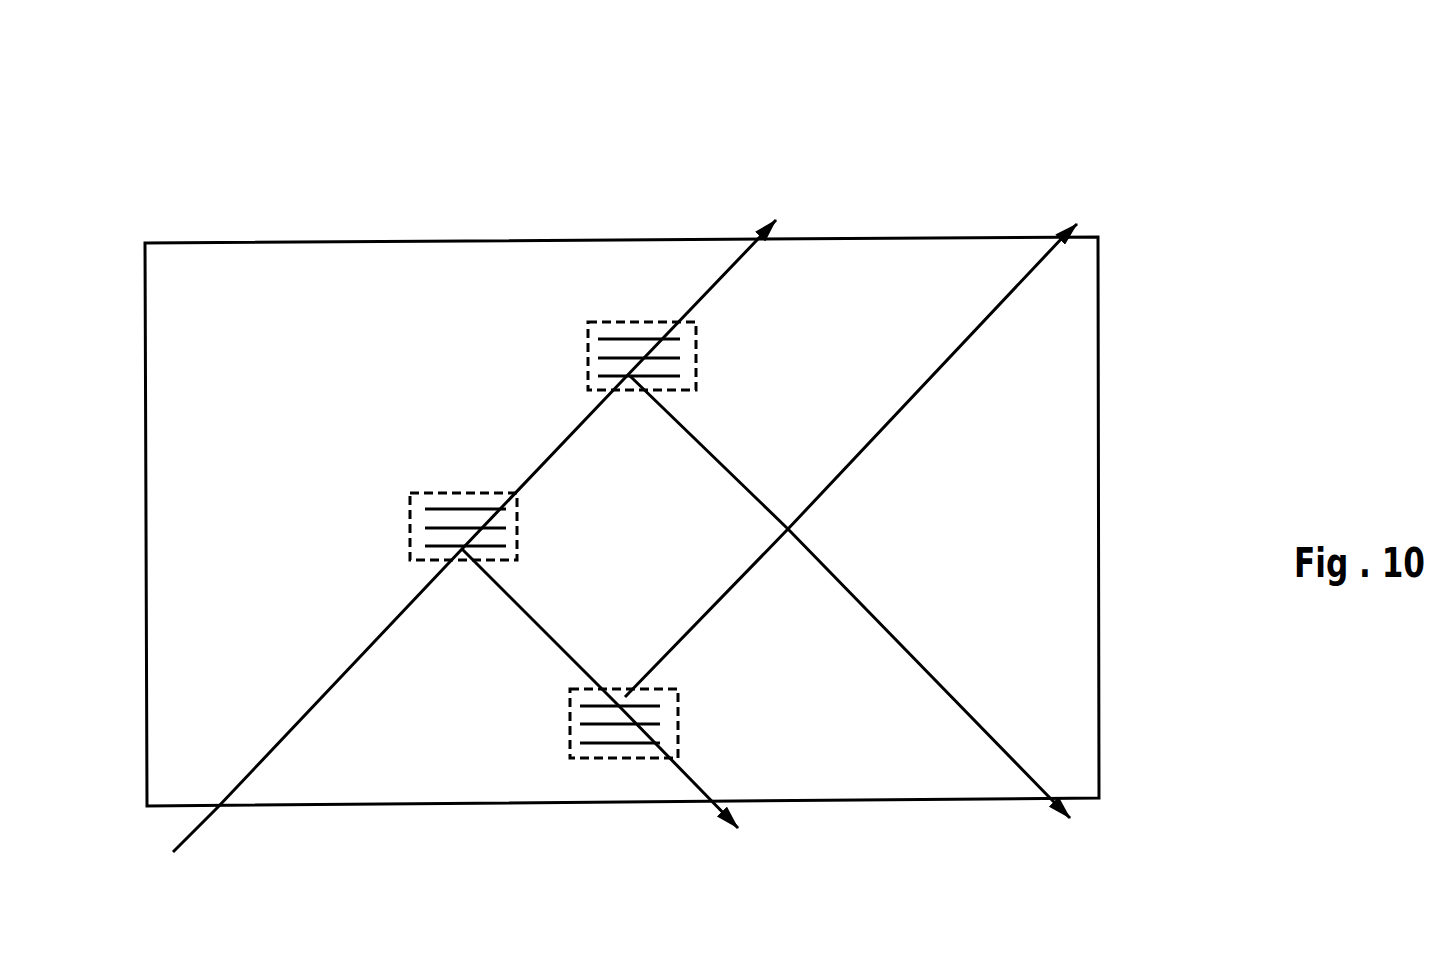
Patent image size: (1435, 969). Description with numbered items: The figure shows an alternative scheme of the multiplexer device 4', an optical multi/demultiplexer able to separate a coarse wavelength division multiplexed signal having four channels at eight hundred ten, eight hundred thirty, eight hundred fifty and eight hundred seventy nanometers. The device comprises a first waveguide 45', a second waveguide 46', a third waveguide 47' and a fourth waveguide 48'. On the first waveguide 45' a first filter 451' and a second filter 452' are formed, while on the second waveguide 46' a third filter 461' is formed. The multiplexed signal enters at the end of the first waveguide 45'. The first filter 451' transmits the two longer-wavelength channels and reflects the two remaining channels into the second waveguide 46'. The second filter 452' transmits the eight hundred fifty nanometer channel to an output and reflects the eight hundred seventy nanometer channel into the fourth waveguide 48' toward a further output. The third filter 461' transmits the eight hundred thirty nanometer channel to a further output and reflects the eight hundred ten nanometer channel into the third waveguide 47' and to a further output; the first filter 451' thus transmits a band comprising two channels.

The multiplexer device 4' is at (622, 521).
The first waveguide 45' is at (474, 536).
The second waveguide 46' is at (549, 688).
The third waveguide 47' is at (851, 460).
The fourth waveguide 48' is at (851, 597).
The first filter 451' is at (474, 406).
The second filter 452' is at (652, 237).
The third filter 461' is at (624, 660).